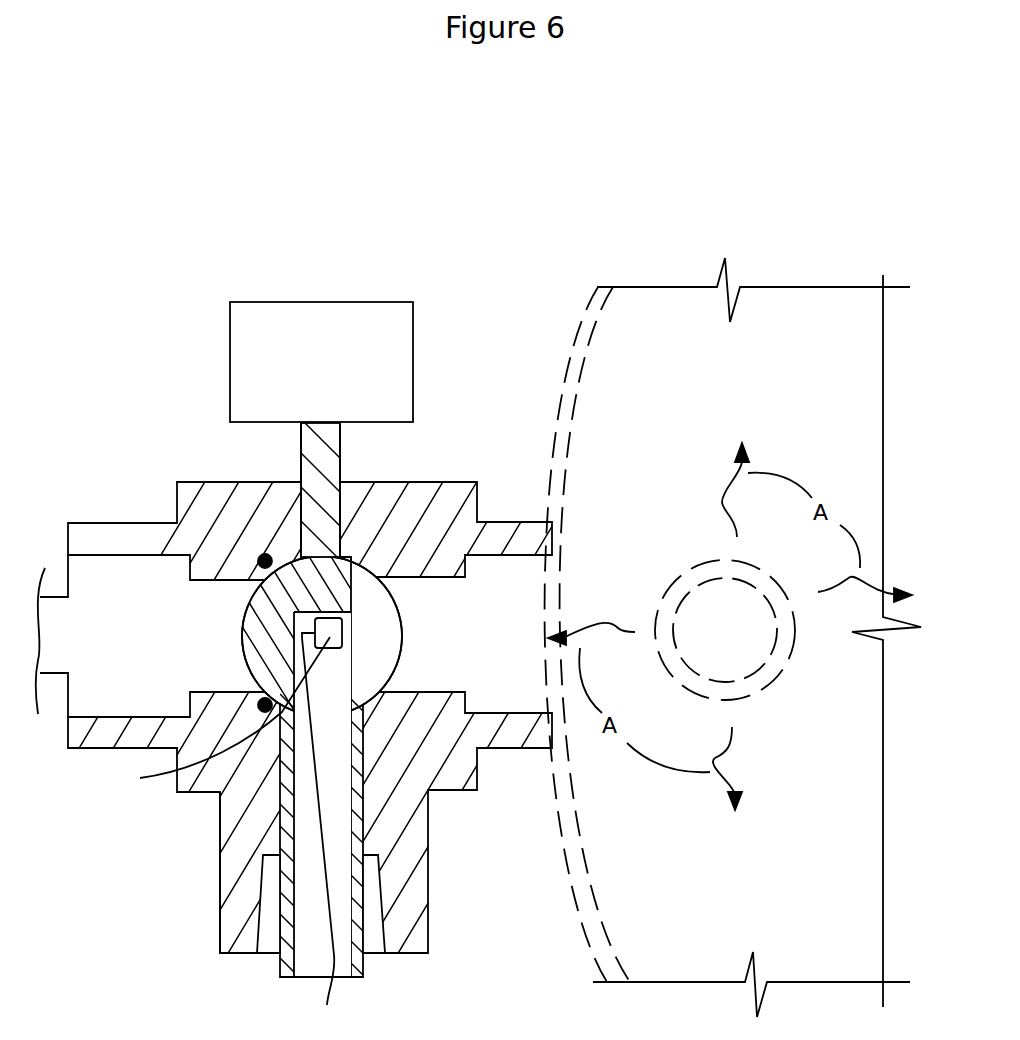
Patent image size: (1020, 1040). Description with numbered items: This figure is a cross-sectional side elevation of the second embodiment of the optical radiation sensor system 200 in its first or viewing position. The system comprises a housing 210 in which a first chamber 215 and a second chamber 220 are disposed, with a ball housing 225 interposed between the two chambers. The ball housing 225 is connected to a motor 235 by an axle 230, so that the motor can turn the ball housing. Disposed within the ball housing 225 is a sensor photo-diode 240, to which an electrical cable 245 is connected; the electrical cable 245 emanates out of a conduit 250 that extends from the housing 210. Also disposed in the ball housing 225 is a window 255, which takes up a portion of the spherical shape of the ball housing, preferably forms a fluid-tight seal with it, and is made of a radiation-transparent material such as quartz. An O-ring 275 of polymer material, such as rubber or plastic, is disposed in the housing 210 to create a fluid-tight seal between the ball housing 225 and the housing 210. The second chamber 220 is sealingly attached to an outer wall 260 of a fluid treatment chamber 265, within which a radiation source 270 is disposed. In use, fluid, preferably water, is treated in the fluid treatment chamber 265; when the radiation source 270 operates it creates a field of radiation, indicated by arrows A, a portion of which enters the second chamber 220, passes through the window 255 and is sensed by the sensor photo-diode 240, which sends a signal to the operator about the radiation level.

The optical radiation sensor system 200 is at (176, 322).
The housing 210 is at (474, 500).
The first chamber 215 is at (150, 648).
The second chamber 220 is at (500, 654).
The ball housing 225 is at (262, 618).
The axle 230 is at (312, 443).
The motor 235 is at (332, 368).
The sensor photo-diode 240 is at (218, 792).
The electrical cable 245 is at (330, 953).
The conduit 250 is at (283, 963).
The window 255 is at (367, 617).
The outer wall 260 is at (590, 318).
The fluid treatment chamber 265 is at (808, 236).
The radiation source 270 is at (736, 642).
The O-ring 275 is at (216, 705).